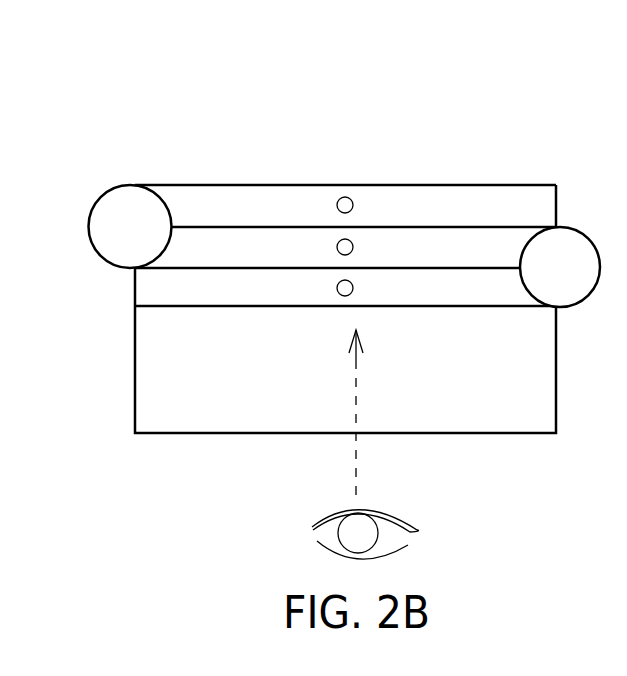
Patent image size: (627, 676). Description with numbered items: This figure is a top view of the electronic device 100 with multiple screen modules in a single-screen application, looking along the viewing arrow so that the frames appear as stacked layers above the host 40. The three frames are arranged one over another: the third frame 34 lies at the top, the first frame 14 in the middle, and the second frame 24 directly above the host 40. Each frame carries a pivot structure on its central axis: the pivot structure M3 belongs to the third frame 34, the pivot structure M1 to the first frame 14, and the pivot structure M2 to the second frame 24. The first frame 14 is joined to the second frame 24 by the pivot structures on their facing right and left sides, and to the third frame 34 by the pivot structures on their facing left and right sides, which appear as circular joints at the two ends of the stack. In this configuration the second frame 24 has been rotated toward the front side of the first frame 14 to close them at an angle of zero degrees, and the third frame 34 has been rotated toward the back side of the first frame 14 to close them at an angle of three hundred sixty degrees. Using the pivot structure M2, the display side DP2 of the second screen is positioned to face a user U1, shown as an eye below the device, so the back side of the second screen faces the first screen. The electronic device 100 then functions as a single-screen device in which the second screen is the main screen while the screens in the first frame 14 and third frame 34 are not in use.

The electronic device 100 is at (358, 245).
The third frame 34 is at (227, 219).
The first frame 14 is at (227, 259).
The second frame 24 is at (227, 299).
The host 40 is at (540, 419).
The display side of the second screen DP2 is at (381, 265).
The pivot structure M1 is at (354, 247).
The pivot structure M2 is at (354, 288).
The pivot structure M3 is at (354, 205).
The user U1 is at (365, 444).